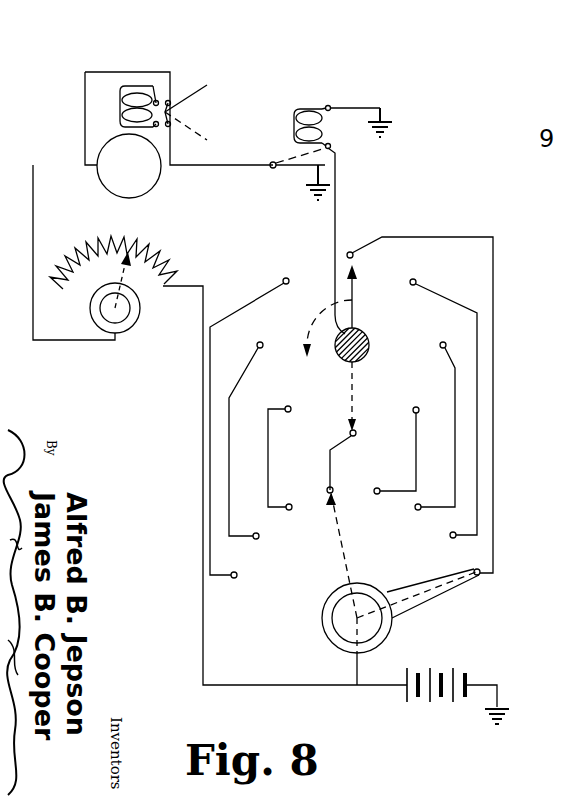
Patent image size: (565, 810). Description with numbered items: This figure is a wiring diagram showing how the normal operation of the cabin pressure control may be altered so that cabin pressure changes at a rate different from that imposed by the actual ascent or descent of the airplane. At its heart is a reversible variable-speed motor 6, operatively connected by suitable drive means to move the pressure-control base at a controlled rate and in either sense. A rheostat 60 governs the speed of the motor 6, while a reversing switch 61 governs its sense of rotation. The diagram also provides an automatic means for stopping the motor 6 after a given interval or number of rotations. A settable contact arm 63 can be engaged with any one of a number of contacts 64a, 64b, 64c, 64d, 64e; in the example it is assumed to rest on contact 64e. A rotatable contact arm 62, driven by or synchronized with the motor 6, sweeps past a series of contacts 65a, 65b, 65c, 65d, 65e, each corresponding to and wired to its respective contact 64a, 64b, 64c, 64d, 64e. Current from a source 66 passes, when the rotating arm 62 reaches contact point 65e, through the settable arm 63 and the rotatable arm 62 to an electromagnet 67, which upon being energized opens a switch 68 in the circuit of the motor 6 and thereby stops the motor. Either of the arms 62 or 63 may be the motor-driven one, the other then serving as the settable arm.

The reversible variable-speed motor 6 is at (150, 183).
The rheostat 60 is at (150, 251).
The reversing switch 61 is at (170, 100).
The rotatable contact arm 62 is at (352, 292).
The settable contact arm 63 is at (430, 600).
The contact 64a is at (480, 570).
The contact 64b is at (456, 533).
The contact 64c is at (421, 505).
The contact 64d is at (377, 494).
The contact 64e is at (330, 494).
The contact 65a is at (352, 251).
The contact 65b is at (415, 279).
The contact 65c is at (443, 342).
The contact 65d is at (441, 380).
The contact point 65e is at (355, 430).
The current source 66 is at (440, 698).
The electromagnet 67 is at (293, 122).
The switch 68 is at (300, 168).